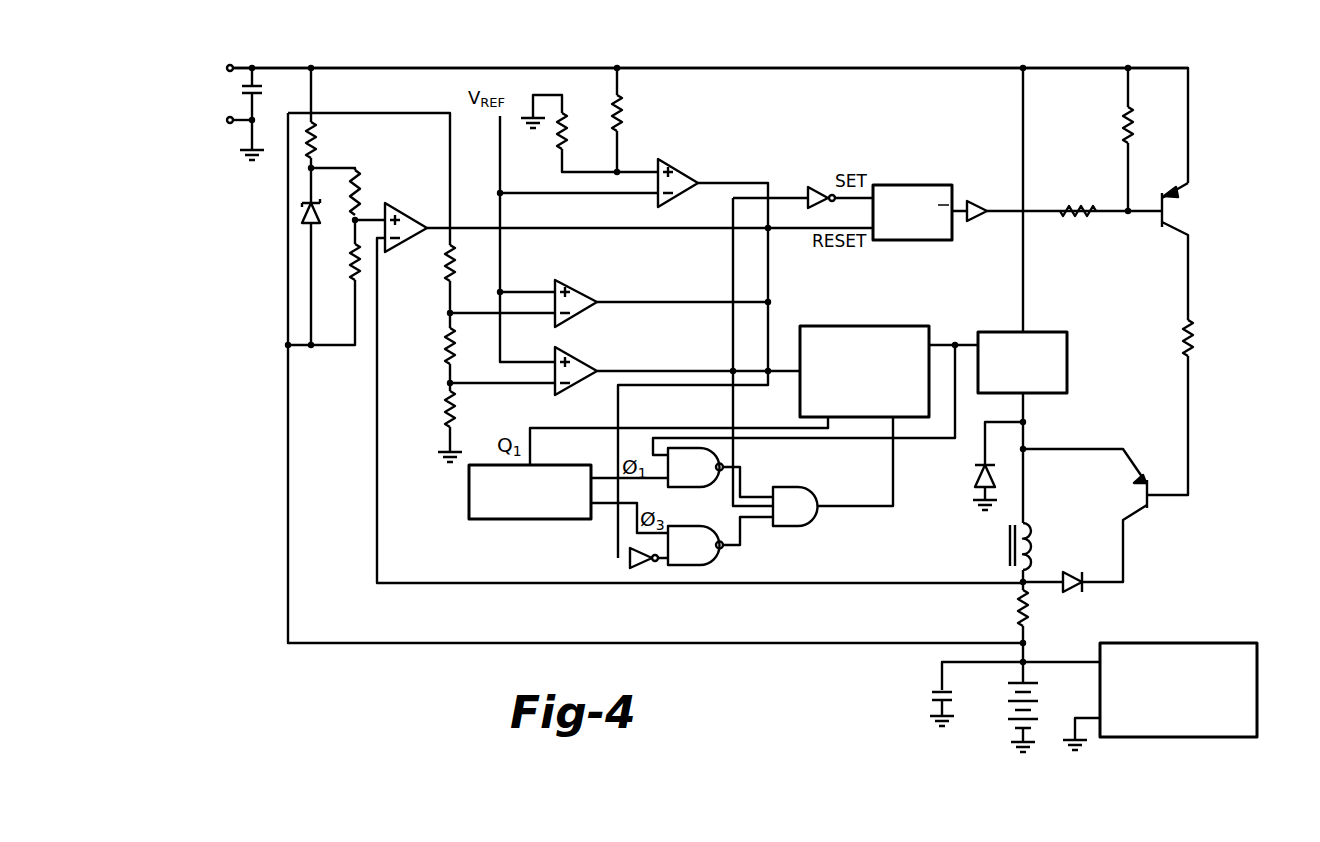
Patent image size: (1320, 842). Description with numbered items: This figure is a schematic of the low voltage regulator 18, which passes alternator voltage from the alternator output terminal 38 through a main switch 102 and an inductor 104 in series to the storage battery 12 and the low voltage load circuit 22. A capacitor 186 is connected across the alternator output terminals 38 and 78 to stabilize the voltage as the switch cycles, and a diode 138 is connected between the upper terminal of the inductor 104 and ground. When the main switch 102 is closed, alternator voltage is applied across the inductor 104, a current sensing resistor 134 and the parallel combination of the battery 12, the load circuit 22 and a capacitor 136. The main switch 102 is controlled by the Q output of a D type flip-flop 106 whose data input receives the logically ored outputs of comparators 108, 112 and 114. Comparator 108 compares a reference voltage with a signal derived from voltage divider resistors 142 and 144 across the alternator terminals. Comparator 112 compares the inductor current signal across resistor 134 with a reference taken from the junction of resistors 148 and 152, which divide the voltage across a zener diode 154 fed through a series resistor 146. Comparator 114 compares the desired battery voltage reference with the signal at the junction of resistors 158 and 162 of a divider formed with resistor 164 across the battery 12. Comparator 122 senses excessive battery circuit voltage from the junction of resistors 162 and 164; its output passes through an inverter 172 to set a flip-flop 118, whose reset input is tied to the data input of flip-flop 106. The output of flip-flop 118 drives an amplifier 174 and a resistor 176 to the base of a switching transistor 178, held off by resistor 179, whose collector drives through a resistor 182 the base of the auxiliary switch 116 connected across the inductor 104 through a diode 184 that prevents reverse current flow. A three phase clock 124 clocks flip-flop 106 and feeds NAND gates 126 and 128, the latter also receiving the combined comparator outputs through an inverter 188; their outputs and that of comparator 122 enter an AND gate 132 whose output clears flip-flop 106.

The storage battery 12 is at (1030, 686).
The low voltage regulator 18 is at (706, 68).
The low voltage load circuit 22 is at (1185, 643).
The alternator output terminal 38 is at (233, 66).
The alternator output terminal 78 is at (230, 124).
The main switch 102 is at (1050, 332).
The inductor 104 is at (1038, 545).
The flip-flop 106 is at (875, 326).
The comparator 108 is at (695, 170).
The comparator 112 is at (398, 250).
The comparator 114 is at (580, 290).
The auxiliary switch 116 is at (1152, 510).
The flip-flop 118 is at (915, 183).
The comparator 122 is at (585, 356).
The three phase clock 124 is at (515, 520).
The NAND gate 126 is at (718, 455).
The NAND gate 128 is at (718, 560).
The AND gate 132 is at (815, 524).
The current sensing resistor 134 is at (1017, 600).
The capacitor 136 is at (940, 690).
The diode 138 is at (978, 474).
The voltage divider resistor 142 is at (621, 120).
The voltage divider resistor 144 is at (566, 130).
The series resistor 146 is at (318, 150).
The resistor 148 is at (360, 198).
The resistor 152 is at (353, 262).
The zener diode 154 is at (300, 204).
The series resistor 158 is at (456, 262).
The series resistor 162 is at (446, 344).
The series resistor 164 is at (446, 414).
The inverter 172 is at (812, 185).
The amplifier 174 is at (975, 200).
The resistor 176 is at (1082, 190).
The switching transistor 178 is at (1168, 215).
The resistor 179 is at (1125, 115).
The resistor 182 is at (1195, 346).
The diode 184 is at (1072, 596).
The capacitor 186 is at (258, 92).
The inverter 188 is at (626, 560).